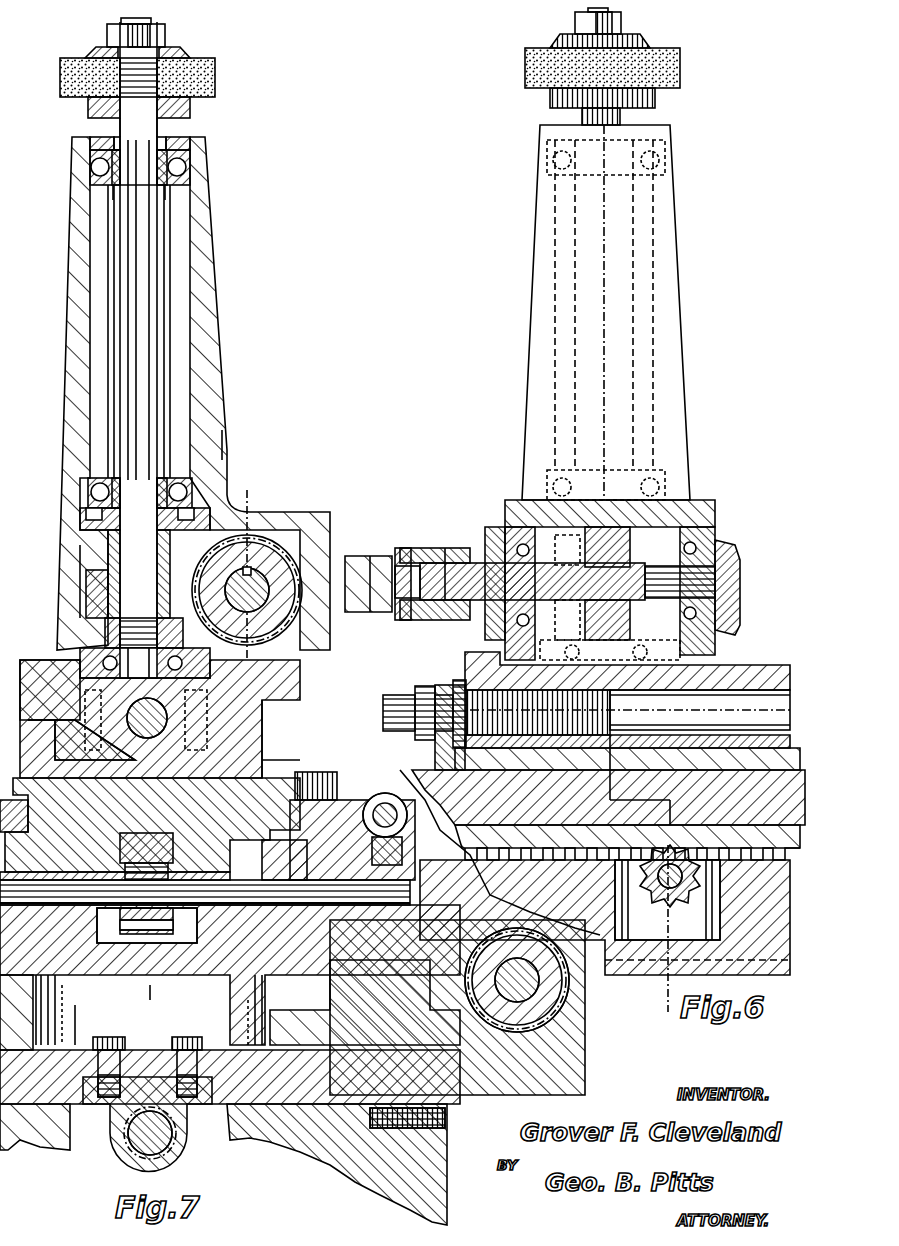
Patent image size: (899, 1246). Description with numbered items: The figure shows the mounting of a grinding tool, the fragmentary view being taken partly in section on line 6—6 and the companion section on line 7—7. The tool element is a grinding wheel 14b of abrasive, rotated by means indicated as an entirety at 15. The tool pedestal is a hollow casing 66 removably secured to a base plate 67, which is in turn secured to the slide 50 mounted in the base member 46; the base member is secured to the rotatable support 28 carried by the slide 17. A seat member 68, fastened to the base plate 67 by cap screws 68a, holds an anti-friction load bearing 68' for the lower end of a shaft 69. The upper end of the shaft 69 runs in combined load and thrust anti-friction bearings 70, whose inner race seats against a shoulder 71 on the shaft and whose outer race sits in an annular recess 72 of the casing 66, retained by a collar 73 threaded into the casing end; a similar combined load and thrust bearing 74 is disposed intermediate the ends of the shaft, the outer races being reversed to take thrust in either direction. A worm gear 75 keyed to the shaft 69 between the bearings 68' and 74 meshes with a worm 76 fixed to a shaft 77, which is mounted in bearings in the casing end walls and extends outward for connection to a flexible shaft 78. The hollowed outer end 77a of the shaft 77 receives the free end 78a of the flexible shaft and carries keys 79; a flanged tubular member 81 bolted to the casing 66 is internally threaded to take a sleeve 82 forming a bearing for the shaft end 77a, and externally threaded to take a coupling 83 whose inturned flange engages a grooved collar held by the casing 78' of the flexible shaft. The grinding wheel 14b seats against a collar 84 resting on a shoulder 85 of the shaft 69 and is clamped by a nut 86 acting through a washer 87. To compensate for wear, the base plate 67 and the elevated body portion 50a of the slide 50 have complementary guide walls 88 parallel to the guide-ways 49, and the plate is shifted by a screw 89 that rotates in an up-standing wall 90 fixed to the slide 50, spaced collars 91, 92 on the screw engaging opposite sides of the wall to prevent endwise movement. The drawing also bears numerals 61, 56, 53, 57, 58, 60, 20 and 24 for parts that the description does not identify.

In FIG. 7, the nut 86 is at (160, 36).
In FIG. 6, the nut 86 is at (575, 20).
In FIG. 7, the collar or washer 87 is at (186, 53).
In FIG. 6, the collar or washer 87 is at (550, 43).
In FIG. 7, the grinding wheel 14b is at (190, 80).
In FIG. 6, the grinding wheel 14b is at (525, 75).
In FIG. 7, the collar 84 is at (90, 112).
In FIG. 6, the collar 84 is at (550, 97).
In FIG. 7, the shoulder 85 is at (130, 124).
In FIG. 7, the collar 73 is at (185, 140).
In FIG. 7, the combined load and thrust anti-friction bearings 70 is at (190, 162).
In FIG. 7, the annular recess 72 is at (190, 173).
In FIG. 7, the shoulder 71 is at (140, 185).
In FIG. 7, the shaft 69 is at (157, 320).
In FIG. 6, the shaft 69 is at (580, 272).
In FIG. 7, the hollow casing 66 is at (212, 385).
In FIG. 6, the hollow casing 66 is at (534, 310).
In FIG. 7, the means for rotating the wheel 15 is at (209, 445).
In FIG. 6, the means for rotating the wheel 15 is at (600, 589).
In FIG. 7, the combined load and thrust anti-friction bearing 74 is at (185, 492).
In FIG. 6, the combined load and thrust anti-friction bearing 74 is at (555, 485).
In FIG. 7, the section line 6 is at (249, 493).
In FIG. 7, the worm 76 is at (285, 555).
In FIG. 7, the worm gear 75 is at (98, 575).
In FIG. 7, the anti-friction load bearing 68' is at (129, 638).
In FIG. 6, the anti-friction load bearing 68' is at (610, 639).
In FIG. 7, the seat member 68 is at (164, 663).
In FIG. 7, the cap screws 68a is at (200, 693).
In FIG. 7, the complementary guide walls 88 is at (55, 735).
In FIG. 7, the base plate 67 is at (262, 724).
In FIG. 6, the base plate 67 is at (762, 668).
In FIG. 7, the elevated body portion 50a is at (281, 762).
In FIG. 7, the slide 50 is at (262, 783).
In FIG. 6, the slide 50 is at (425, 772).
In FIG. 7, the screw 89 is at (142, 735).
In FIG. 7, the rack bar 61 is at (173, 855).
In FIG. 6, the rack bar 61 is at (625, 875).
In FIG. 7, the guide-ways 49 is at (285, 845).
In FIG. 7, the clamp bolt 56 is at (325, 798).
In FIG. 7, the pivot pin 53 is at (392, 795).
In FIG. 7, the stud 57 is at (400, 849).
In FIG. 7, the pinion shaft 58 is at (245, 910).
In FIG. 6, the pinion shaft 58 is at (690, 878).
In FIG. 7, the key 60 is at (160, 936).
In FIG. 6, the key 60 is at (690, 905).
In FIG. 7, the base member 46 is at (124, 1012).
In FIG. 7, the rotatable support 28 is at (275, 1028).
In FIG. 7, the slide 17 is at (232, 1117).
In FIG. 7, the pivot shaft 20 is at (168, 1142).
In FIG. 7, the bearing bushing 24 is at (178, 1155).
In FIG. 6, the shaft 77 is at (700, 583).
In FIG. 6, the outer end of the shaft 77a is at (510, 535).
In FIG. 6, the keys 79 is at (462, 560).
In FIG. 6, the tubular member 81 is at (440, 548).
In FIG. 6, the coupling 83 is at (405, 548).
In FIG. 6, the sleeve 82 is at (445, 620).
In FIG. 6, the flexible shaft 78 is at (368, 602).
In FIG. 6, the casing for the flexible shaft 78' is at (371, 565).
In FIG. 6, the free end of the shaft 78a is at (587, 583).
In FIG. 6, the up-standing plate or wall 90 is at (420, 738).
In FIG. 6, the collar 91 is at (426, 686).
In FIG. 6, the collar 92 is at (458, 680).
In FIG. 6, the section line 7 is at (680, 985).